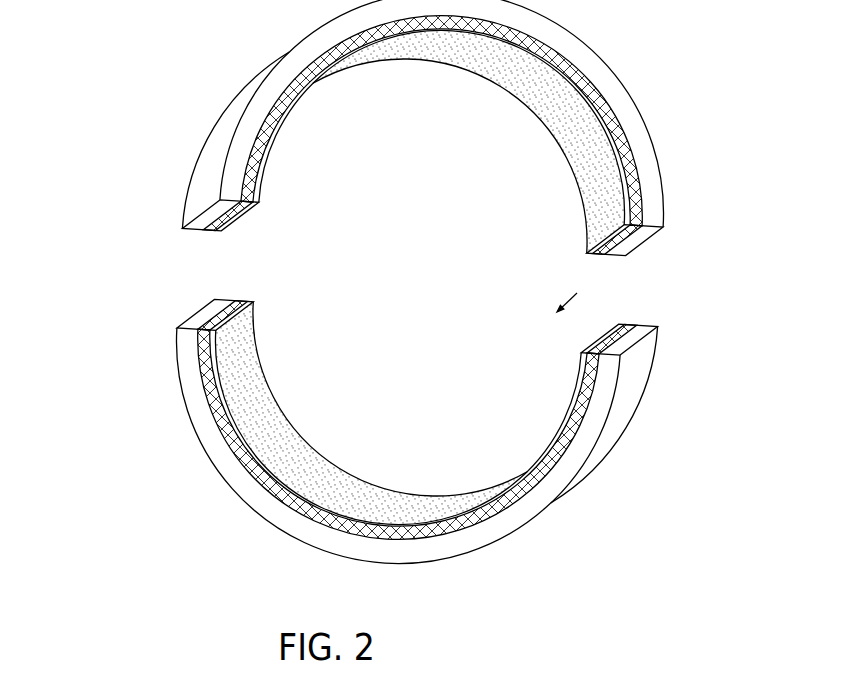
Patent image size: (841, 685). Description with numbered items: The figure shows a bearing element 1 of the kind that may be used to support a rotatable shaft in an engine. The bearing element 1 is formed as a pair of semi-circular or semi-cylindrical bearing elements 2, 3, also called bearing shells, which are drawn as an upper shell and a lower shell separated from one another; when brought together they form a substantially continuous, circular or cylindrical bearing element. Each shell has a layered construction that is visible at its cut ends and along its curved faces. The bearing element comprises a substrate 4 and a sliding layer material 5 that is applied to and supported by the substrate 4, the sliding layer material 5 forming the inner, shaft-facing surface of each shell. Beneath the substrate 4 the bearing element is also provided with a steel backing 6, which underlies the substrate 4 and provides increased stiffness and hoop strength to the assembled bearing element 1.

The bearing element 1 is at (147, 43).
The semi-cylindrical bearing element 2 is at (680, 128).
The semi-cylindrical bearing element 3 is at (658, 405).
The substrate 4 is at (599, 93).
The sliding layer material 5 is at (565, 122).
The steel backing 6 is at (628, 105).